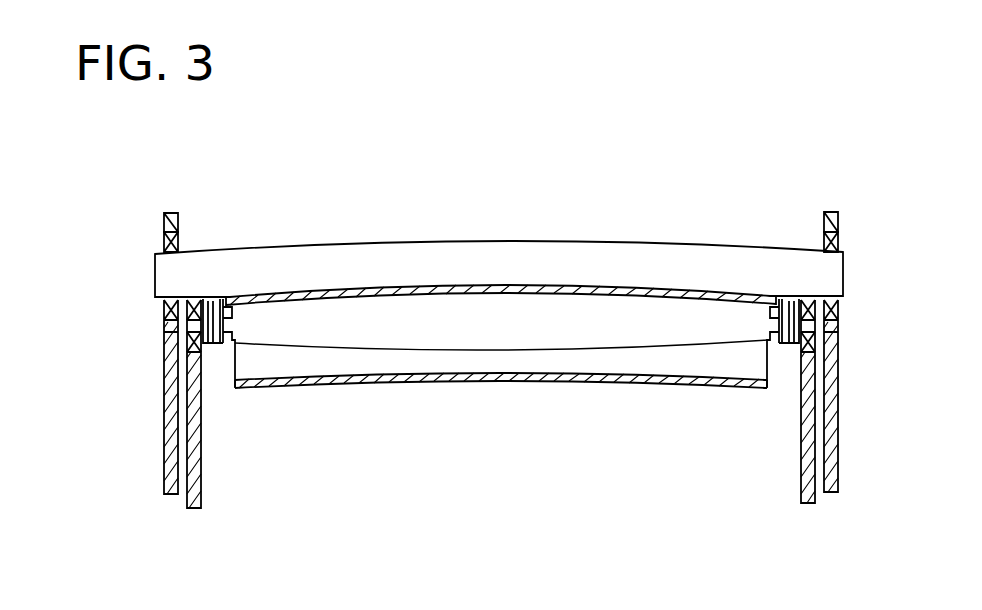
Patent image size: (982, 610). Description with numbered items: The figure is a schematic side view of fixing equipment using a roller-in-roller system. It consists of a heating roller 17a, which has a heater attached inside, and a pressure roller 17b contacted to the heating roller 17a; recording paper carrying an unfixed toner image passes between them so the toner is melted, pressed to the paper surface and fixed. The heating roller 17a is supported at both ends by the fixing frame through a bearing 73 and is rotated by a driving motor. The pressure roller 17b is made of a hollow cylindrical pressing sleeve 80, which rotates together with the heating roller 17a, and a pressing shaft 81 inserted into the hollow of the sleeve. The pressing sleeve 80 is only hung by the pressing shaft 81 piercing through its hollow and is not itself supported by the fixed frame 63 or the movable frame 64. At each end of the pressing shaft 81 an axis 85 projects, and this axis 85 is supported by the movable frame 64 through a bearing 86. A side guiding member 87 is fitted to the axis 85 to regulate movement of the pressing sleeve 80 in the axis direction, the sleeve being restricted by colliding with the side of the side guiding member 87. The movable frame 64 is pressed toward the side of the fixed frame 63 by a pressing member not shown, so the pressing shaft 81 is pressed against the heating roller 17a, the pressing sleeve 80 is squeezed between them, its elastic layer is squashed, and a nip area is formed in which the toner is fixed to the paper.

The heating roller 17a is at (405, 196).
The pressure roller 17b is at (501, 407).
The fixed frame 63 is at (179, 221).
The bearing 73 is at (179, 243).
The axis 85 is at (190, 323).
The bearing 86 is at (175, 340).
The side guiding member 87 is at (212, 346).
The pressing sleeve 80 is at (404, 395).
The pressing shaft 81 is at (474, 360).
The movable frame 64 is at (198, 486).